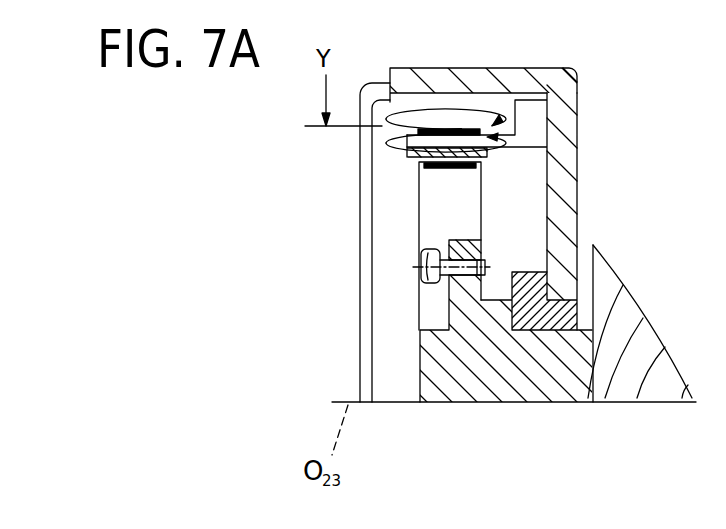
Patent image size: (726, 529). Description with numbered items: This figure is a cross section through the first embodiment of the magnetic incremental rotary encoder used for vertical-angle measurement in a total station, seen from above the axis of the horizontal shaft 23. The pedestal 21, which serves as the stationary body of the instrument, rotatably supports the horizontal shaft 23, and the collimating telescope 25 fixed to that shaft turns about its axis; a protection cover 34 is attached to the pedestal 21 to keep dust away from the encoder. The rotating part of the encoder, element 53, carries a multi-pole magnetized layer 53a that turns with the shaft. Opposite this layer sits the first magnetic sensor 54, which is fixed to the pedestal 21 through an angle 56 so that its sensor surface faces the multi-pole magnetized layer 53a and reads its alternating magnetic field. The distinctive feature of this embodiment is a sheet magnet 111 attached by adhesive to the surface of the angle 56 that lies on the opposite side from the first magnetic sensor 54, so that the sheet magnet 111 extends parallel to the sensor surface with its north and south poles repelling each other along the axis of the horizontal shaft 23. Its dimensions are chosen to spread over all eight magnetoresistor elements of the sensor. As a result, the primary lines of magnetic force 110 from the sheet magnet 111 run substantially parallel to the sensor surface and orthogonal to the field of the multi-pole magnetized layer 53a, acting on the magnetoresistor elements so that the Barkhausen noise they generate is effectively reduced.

The pedestal 21 is at (523, 82).
The horizontal shaft 23 is at (438, 366).
The collimating telescope 25 is at (623, 316).
The protection cover 34 is at (366, 212).
The support bracket 53 is at (470, 222).
The multi-pole magnetized layer 53a is at (455, 170).
The first magnetic sensor 54 is at (497, 152).
The angle 56 is at (535, 117).
The primary lines of magnetic force 110 is at (410, 117).
The sheet magnet 111 is at (458, 128).